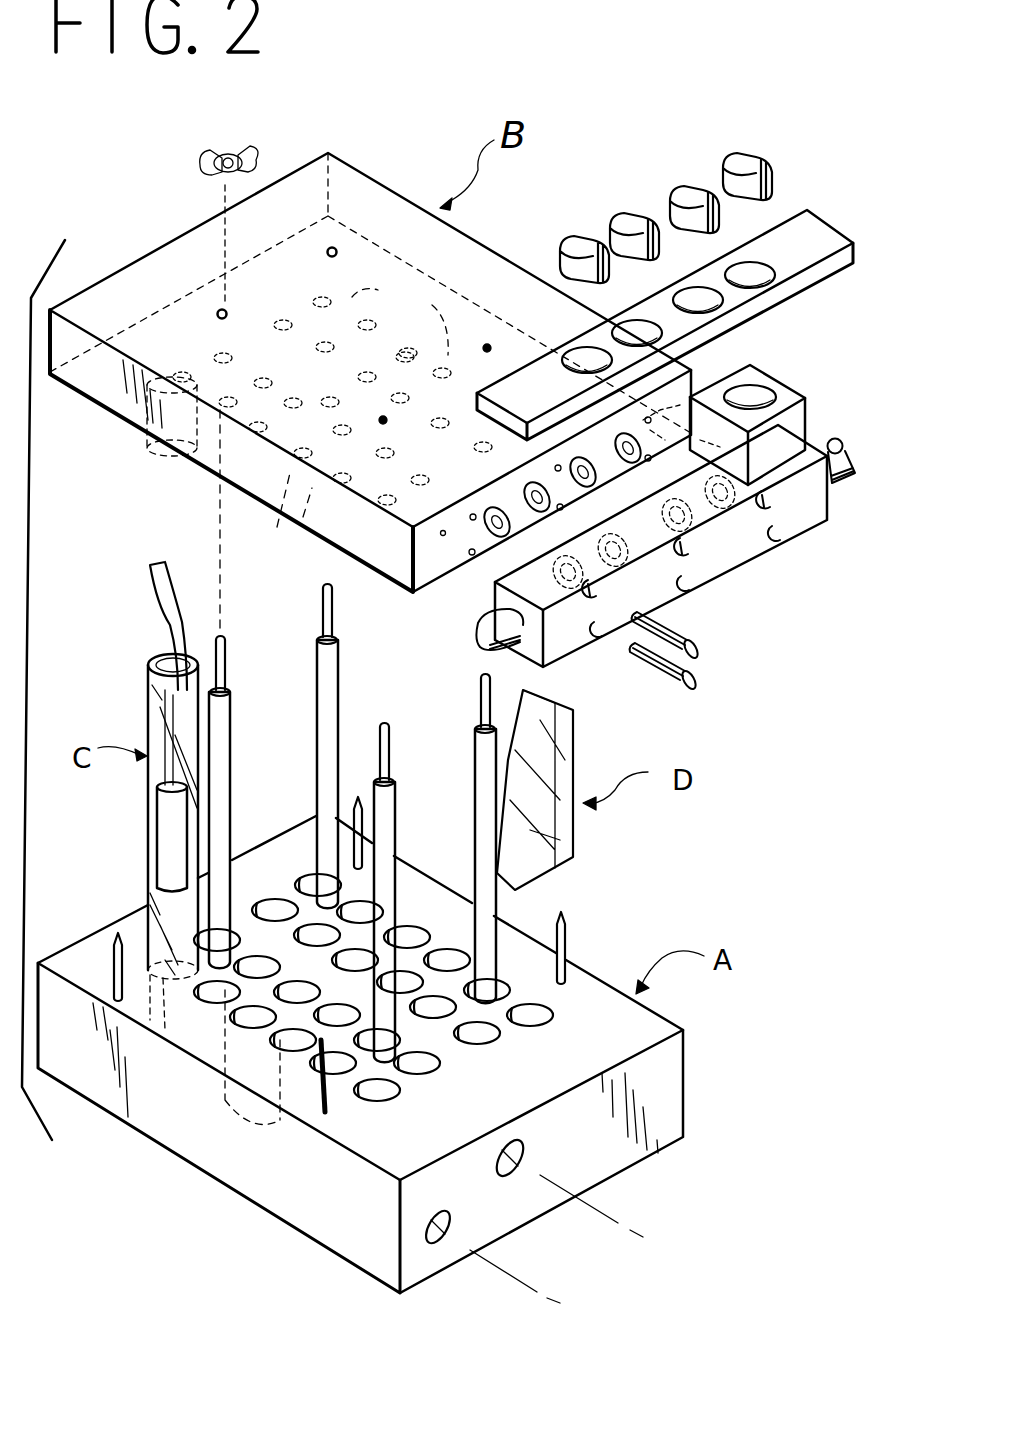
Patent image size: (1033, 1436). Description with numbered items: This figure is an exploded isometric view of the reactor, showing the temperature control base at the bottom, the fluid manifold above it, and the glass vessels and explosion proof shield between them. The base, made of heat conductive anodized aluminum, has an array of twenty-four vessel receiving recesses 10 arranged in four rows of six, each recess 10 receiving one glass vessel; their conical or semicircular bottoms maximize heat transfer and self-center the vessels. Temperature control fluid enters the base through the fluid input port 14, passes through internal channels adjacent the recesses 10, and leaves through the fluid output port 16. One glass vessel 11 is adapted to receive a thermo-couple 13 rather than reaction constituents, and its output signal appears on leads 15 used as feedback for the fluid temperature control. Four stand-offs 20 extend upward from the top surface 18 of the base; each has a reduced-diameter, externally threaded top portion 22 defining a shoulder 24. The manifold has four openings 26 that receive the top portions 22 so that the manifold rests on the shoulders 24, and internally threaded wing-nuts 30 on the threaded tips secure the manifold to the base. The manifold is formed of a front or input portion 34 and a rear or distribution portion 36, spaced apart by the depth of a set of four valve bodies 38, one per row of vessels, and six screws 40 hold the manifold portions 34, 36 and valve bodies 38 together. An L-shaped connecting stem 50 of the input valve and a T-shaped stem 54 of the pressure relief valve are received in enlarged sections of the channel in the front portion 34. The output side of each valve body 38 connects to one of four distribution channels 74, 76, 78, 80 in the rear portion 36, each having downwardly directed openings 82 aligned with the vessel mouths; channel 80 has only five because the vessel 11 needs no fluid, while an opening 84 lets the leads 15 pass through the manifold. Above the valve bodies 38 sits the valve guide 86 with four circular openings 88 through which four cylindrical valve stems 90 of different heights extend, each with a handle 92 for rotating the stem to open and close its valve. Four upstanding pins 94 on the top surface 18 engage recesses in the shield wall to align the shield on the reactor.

The vessel receiving recesses 10 is at (300, 873).
The glass vessel 11 is at (150, 700).
The thermo-couple 13 is at (172, 838).
The fluid input port 14 is at (508, 1180).
The leads 15 is at (167, 607).
The fluid output port 16 is at (433, 1232).
The top surface 18 is at (653, 1030).
The stand-offs 20 is at (222, 745).
The top portion 22 is at (324, 592).
The shoulder 24 is at (228, 685).
The openings 26 is at (226, 312).
The wing-nuts 30 is at (212, 163).
The front or input portion 34 is at (728, 548).
The rear or distribution portion 36 is at (370, 200).
The valve bodies 38 is at (800, 392).
The screws 40 is at (700, 650).
The connecting stem 50 is at (828, 440).
The stem 54 is at (490, 627).
The distribution channel 74 is at (633, 462).
The distribution channel 76 is at (577, 467).
The distribution channel 78 is at (527, 497).
The distribution channel 80 is at (443, 540).
The openings 82 is at (377, 302).
The opening 84 is at (157, 465).
The valve guide 86 is at (812, 235).
The circular openings 88 is at (637, 333).
The valve stems 90 is at (637, 227).
The handle 92 is at (355, 830).
The pins 94 is at (573, 853).